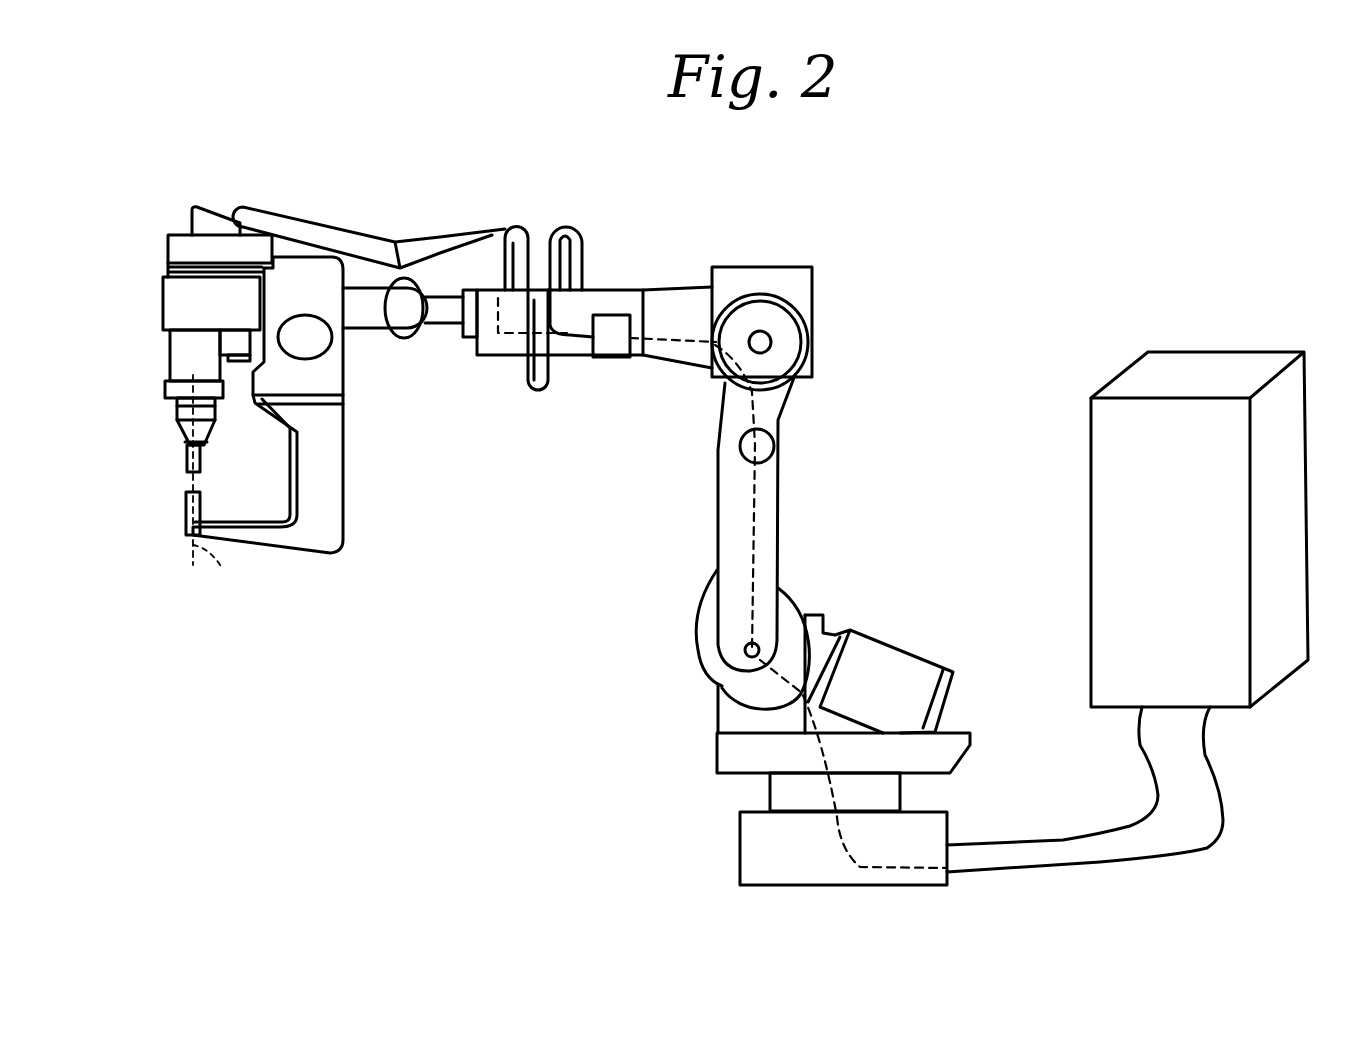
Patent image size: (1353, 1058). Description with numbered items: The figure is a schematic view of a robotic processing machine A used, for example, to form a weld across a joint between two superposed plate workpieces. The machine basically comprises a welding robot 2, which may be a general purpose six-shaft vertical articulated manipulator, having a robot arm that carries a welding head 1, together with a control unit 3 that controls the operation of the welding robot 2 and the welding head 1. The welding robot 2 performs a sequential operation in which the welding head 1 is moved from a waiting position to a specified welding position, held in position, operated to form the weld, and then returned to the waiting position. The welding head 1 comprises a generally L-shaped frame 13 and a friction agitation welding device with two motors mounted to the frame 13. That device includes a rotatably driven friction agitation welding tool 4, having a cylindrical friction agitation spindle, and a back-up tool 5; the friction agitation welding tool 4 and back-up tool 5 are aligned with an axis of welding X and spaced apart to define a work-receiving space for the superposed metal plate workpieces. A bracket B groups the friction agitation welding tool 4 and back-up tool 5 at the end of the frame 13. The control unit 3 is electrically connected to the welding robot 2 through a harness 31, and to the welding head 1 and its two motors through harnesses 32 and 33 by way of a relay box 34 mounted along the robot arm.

The welding head 1 is at (357, 411).
The welding robot 2 is at (790, 268).
The control unit 3 is at (1285, 350).
The friction agitation welding tool 4 is at (186, 462).
The back-up tool 5 is at (186, 508).
The frame 13 is at (343, 527).
The harness 31 is at (1063, 838).
The harness 32 is at (1177, 853).
The harness 33 is at (395, 240).
The relay box 34 is at (608, 360).
The robotic processing machine A is at (893, 330).
The nozzle unit B is at (126, 442).
The axis of welding X is at (222, 570).